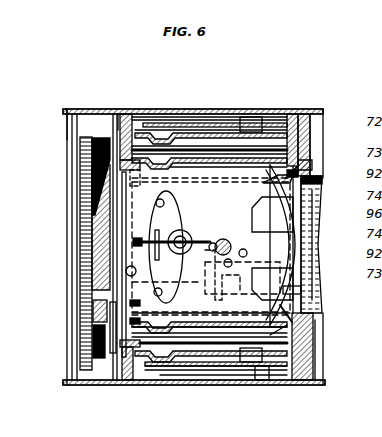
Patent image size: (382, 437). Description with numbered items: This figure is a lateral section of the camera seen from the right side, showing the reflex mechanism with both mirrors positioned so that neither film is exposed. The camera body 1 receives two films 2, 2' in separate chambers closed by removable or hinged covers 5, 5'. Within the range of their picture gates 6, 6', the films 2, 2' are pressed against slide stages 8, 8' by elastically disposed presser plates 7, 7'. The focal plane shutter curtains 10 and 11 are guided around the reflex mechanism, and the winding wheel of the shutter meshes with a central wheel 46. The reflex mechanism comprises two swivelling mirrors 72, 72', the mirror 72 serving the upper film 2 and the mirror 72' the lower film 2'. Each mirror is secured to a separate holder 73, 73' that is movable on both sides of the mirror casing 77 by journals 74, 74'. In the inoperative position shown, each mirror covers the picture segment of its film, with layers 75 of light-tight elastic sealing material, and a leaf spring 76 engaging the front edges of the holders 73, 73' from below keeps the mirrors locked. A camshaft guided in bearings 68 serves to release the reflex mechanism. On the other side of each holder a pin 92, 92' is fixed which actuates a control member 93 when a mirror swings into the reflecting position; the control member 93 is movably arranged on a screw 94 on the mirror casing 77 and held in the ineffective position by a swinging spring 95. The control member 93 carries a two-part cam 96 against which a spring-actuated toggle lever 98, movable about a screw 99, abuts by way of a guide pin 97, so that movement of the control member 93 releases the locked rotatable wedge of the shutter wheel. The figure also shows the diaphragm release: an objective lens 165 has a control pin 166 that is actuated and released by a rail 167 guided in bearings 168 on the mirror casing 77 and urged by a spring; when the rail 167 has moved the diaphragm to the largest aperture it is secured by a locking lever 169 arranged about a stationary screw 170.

The central wheel 46 is at (72, 135).
The mirror holder 73 is at (215, 131).
The camera body 1 is at (121, 118).
The light-admitting curtain 10 is at (156, 125).
The curtain 11 is at (170, 135).
The film 2 is at (209, 119).
The picture gate 6 is at (209, 126).
The presser plate 7 is at (209, 102).
The swivelling mirror 72 is at (211, 122).
The cover 5 is at (193, 90).
The slide stage 8 is at (255, 99).
The sealing layer 75 is at (140, 186).
The control member 93 is at (88, 175).
The journal 74 is at (61, 253).
The guide pin 97 is at (133, 240).
The two-part cam 96 is at (128, 266).
The swinging spring 95 is at (122, 246).
The journal 74' is at (69, 227).
The locking lever 169 is at (82, 288).
The screw 99 is at (130, 302).
The stationary screw 170 is at (128, 318).
The mirror holder 73' is at (191, 365).
The toggle lever 98 is at (120, 340).
The cover 5' is at (189, 399).
The bearing 168 is at (164, 383).
The film 2' is at (209, 372).
The picture gate 6' is at (216, 381).
The rail 167 is at (260, 352).
The slide stage 8' is at (258, 378).
The presser plate 7' is at (282, 371).
The swivelling mirror 72' is at (228, 365).
The pin 92 is at (176, 247).
The screw 94 is at (183, 238).
The pin 92' is at (177, 288).
The bearing 68 is at (242, 277).
The leaf spring 76 is at (288, 204).
The objective lens 165 is at (311, 270).
The mirror casing 77 is at (273, 246).
The control pin 166 is at (292, 292).